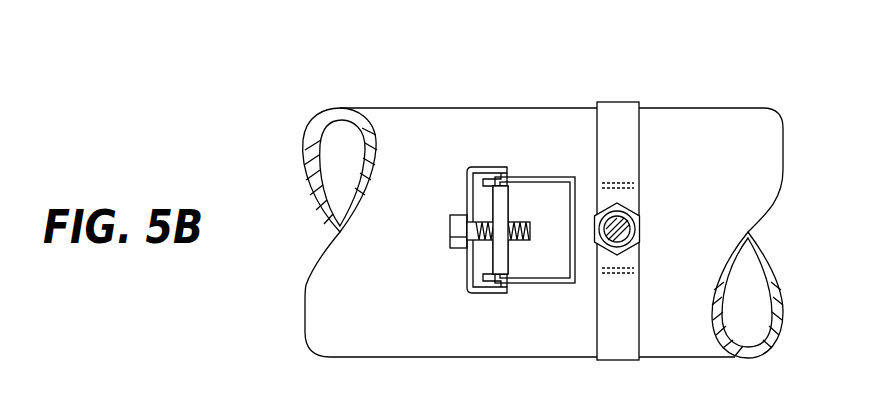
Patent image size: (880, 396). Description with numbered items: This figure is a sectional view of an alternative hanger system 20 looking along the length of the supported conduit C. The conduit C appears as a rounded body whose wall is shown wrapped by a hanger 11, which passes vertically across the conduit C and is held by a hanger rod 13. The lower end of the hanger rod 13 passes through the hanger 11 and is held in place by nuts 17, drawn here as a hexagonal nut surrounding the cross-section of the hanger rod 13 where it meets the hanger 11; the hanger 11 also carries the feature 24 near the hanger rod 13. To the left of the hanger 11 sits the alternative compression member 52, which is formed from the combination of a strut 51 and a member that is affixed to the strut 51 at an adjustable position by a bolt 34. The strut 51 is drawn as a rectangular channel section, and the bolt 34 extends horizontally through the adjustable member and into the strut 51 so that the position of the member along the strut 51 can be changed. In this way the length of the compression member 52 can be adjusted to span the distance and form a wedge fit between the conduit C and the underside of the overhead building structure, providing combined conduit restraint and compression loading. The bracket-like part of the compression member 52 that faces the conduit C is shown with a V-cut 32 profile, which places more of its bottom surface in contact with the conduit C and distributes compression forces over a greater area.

The hanger system 20 is at (610, 52).
The hanger 11 is at (594, 100).
The strap slot 24 is at (622, 180).
The conduit C is at (750, 145).
The nuts 17 is at (626, 208).
The hanger rod 13 is at (630, 230).
The strut 51 is at (552, 177).
The bolt 34 is at (450, 232).
The V-cut 32 is at (465, 262).
The compression member 52 is at (383, 293).